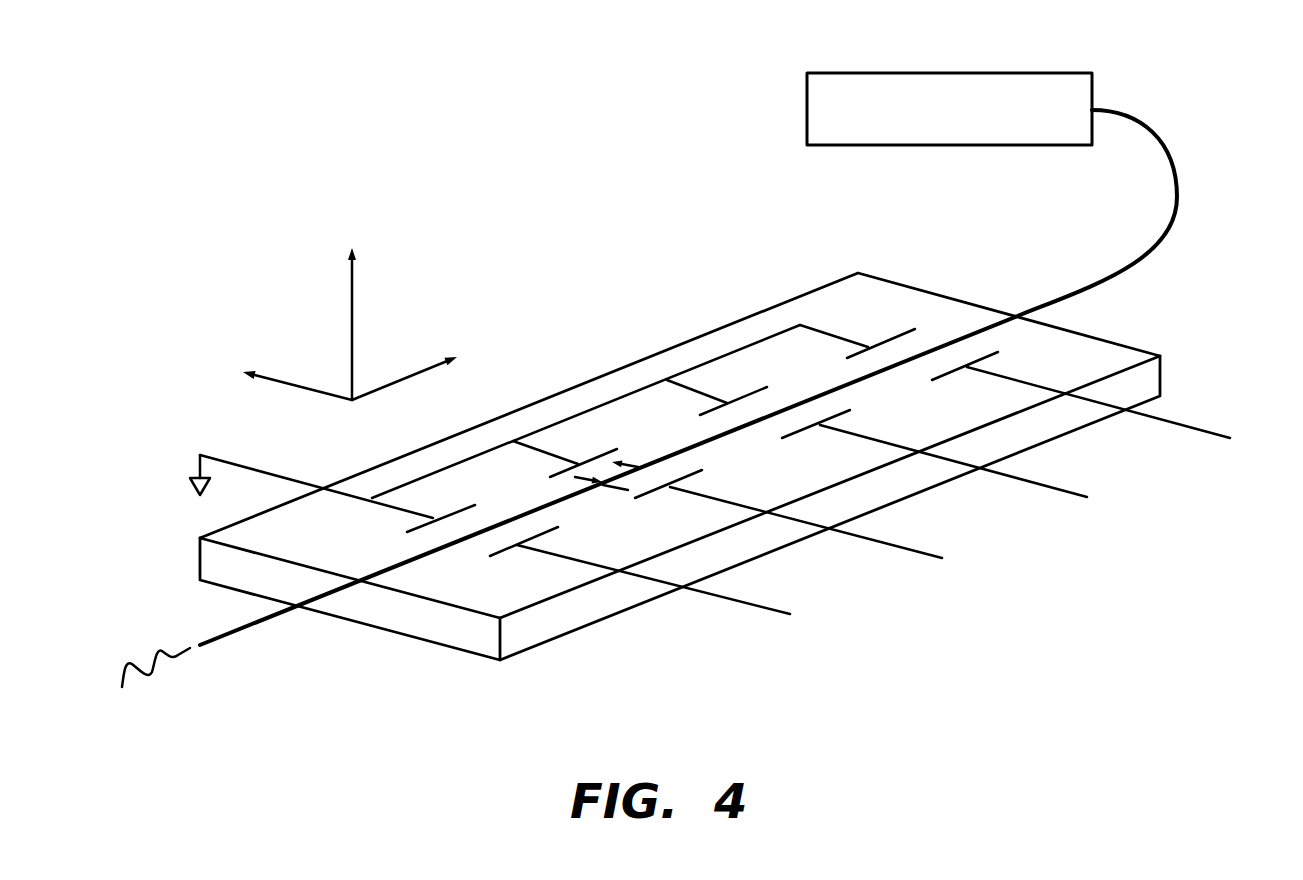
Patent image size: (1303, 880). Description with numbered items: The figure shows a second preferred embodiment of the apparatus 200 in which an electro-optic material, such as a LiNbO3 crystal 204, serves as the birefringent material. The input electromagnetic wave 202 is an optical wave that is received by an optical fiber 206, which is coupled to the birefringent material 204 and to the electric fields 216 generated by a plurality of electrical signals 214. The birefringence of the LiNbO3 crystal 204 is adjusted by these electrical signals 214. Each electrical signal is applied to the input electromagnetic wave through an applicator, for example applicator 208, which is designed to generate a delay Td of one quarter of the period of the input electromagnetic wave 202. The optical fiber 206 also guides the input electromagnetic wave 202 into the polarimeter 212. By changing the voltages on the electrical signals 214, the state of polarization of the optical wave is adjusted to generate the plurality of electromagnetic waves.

The electro-optic polarization controller apparatus 200 is at (258, 259).
The input electromagnetic wave 202 is at (128, 678).
The LiNbO3 crystal 204 is at (493, 592).
The optical fiber 206 is at (217, 645).
The applicator 208 is at (525, 545).
The polarimeter 212 is at (1063, 73).
The electrical signals 214 is at (1000, 602).
The electric fields 216 is at (637, 466).